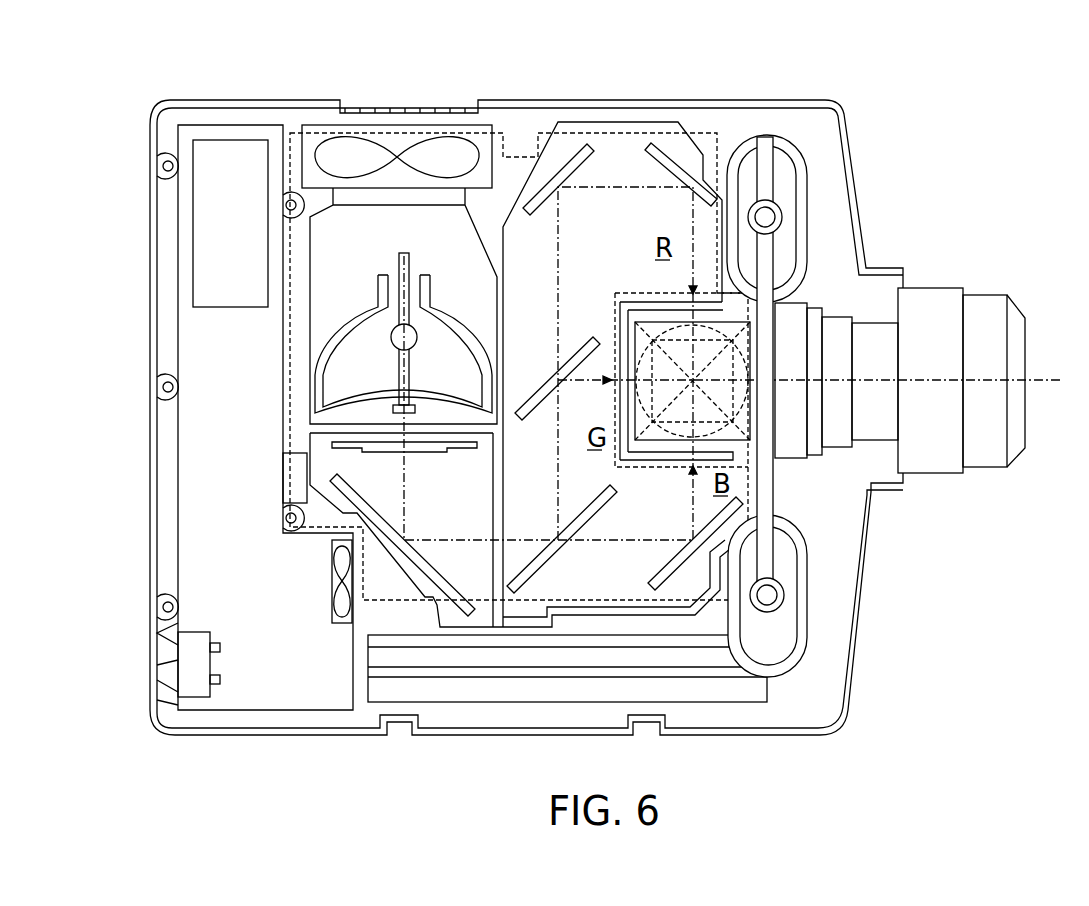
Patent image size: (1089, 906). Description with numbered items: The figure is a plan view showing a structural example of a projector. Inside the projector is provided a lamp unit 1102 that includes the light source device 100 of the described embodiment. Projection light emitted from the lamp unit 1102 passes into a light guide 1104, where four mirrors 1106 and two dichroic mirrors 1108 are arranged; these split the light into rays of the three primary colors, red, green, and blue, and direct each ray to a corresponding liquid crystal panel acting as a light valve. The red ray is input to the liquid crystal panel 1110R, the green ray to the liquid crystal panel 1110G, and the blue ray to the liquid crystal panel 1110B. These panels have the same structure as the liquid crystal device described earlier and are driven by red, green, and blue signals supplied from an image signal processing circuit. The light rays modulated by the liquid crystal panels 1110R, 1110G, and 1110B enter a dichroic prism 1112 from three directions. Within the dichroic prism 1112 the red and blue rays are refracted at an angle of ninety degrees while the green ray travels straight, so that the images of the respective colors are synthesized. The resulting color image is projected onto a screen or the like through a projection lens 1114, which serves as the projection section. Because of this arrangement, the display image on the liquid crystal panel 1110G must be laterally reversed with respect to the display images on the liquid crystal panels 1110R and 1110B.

The light source device 100 is at (392, 263).
The lamp unit 1102 is at (468, 240).
The light guide 1104 is at (545, 133).
The mirrors 1106 is at (668, 170).
The dichroic mirrors 1108 is at (540, 393).
The liquid crystal panel 1110R is at (662, 300).
The liquid crystal panel 1110G is at (627, 337).
The liquid crystal panel 1110B is at (662, 457).
The dichroic prism 1112 is at (750, 440).
The projection lens 1114 is at (980, 303).